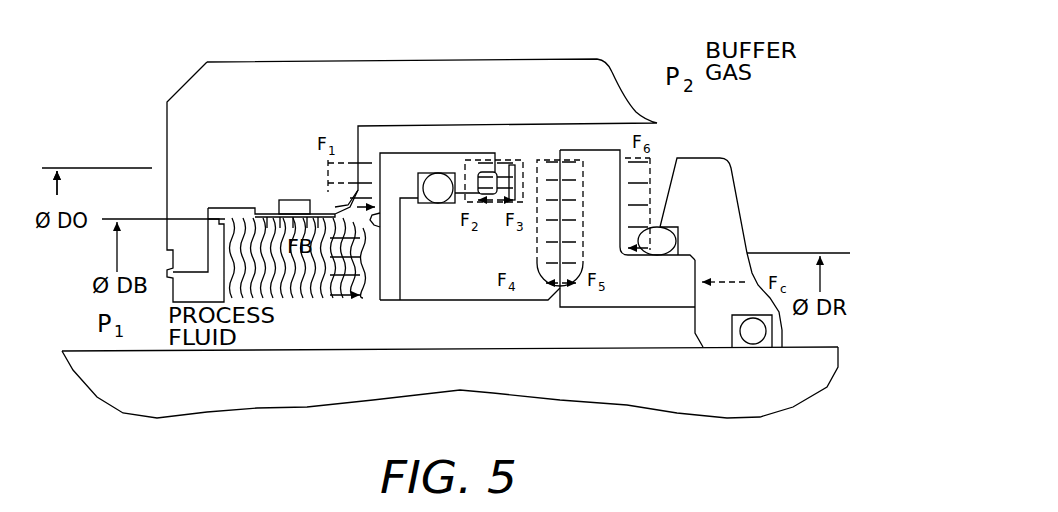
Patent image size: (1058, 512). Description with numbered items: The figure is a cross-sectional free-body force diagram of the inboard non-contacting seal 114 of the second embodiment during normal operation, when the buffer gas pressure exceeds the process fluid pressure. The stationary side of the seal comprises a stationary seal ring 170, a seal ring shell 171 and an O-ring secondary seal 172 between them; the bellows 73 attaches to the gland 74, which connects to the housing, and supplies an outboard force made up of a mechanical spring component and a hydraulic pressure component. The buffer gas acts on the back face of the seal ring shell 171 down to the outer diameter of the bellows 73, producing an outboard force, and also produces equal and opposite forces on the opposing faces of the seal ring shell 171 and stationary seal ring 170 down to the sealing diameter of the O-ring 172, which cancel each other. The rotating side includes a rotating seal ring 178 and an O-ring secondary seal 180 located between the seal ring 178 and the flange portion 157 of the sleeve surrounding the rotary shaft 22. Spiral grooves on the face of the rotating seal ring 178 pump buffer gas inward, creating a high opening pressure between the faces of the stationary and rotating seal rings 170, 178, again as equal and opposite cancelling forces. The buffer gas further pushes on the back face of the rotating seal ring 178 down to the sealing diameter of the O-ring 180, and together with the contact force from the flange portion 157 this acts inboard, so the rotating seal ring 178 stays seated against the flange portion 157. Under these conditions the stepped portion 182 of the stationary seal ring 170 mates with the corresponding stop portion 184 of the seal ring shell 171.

The gland 74 is at (223, 107).
The bellows 73 is at (288, 292).
The seal ring shell 171 is at (400, 177).
The O-ring secondary seal 172 is at (437, 190).
The stationary seal ring 170 is at (462, 270).
The stop portion 184 is at (493, 172).
The stepped portion 182 is at (513, 165).
The rotating seal ring 178 is at (653, 287).
The O-ring secondary seal 180 is at (657, 235).
The flange portion 157 is at (720, 197).
The rotary shaft 22 is at (732, 395).
The inboard non-contacting seal 114 is at (552, 318).